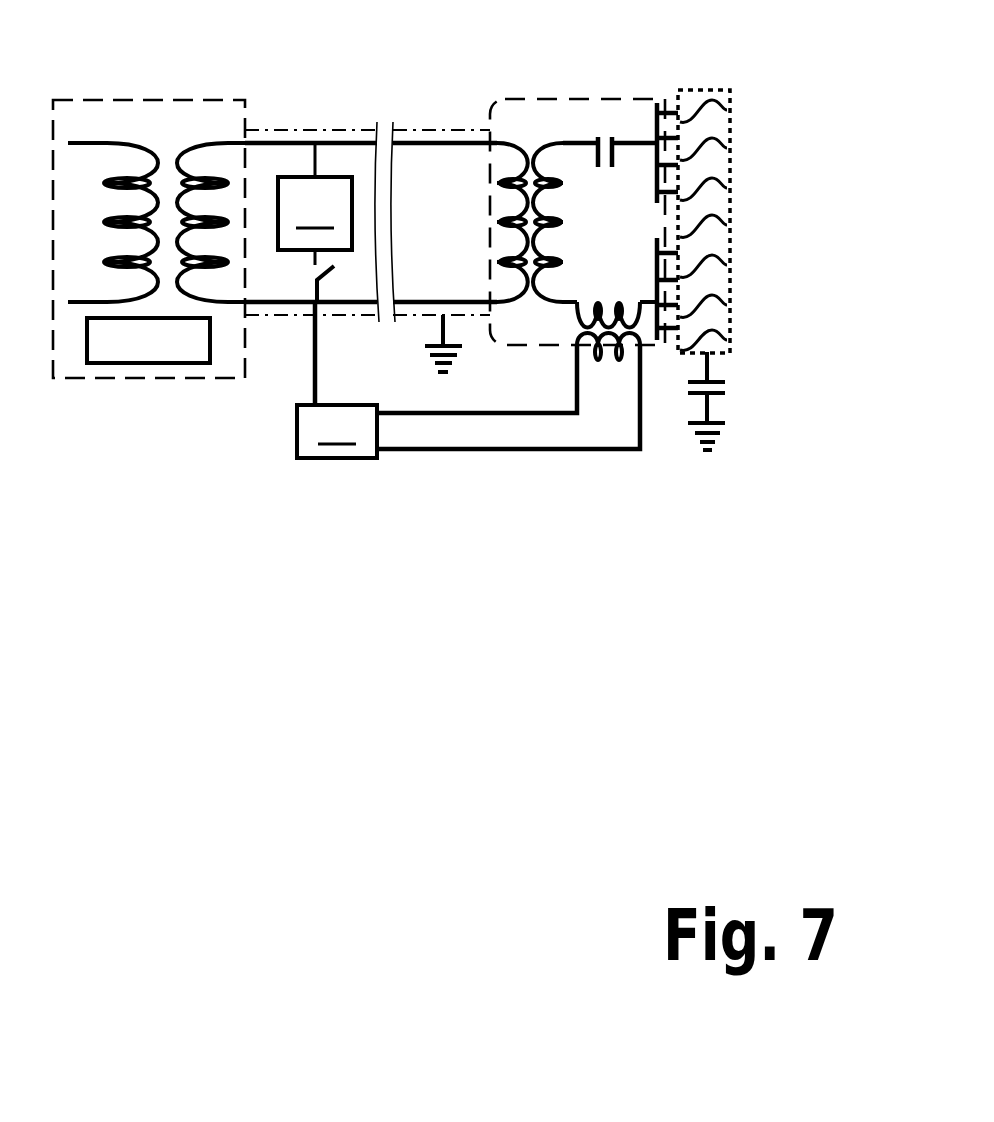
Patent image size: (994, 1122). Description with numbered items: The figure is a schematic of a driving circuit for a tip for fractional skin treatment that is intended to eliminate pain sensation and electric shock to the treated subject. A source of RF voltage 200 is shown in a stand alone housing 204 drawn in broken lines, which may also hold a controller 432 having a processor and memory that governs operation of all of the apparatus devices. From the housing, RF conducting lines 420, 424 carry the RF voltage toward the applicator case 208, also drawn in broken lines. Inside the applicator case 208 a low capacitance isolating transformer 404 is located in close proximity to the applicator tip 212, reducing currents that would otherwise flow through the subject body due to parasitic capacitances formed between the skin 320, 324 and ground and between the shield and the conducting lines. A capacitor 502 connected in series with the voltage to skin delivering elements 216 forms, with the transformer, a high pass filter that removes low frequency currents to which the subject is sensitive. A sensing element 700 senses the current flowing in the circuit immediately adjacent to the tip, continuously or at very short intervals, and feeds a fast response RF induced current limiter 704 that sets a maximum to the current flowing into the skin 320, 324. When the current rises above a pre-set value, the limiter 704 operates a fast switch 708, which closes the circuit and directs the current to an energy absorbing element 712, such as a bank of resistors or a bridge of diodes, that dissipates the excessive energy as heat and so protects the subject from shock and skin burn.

The source of RF voltage 200 is at (114, 86).
The stand alone housing 204 is at (108, 380).
The controller 432 is at (167, 360).
The RF conducting line 420 is at (272, 142).
The RF conducting line 424 is at (357, 308).
The energy absorbing element 712 is at (315, 204).
The fast switch 708 is at (311, 277).
The fast response RF induced current limiter 704 is at (468, 380).
The isolating transformer 404 is at (489, 202).
The applicator case 208 is at (523, 98).
The capacitor 502 is at (598, 143).
The applicator tip 212 is at (657, 110).
The voltage to skin delivering elements 216 is at (672, 333).
The sensing element 700 is at (567, 325).
The subject skin 320 is at (705, 90).
The subject skin 324 is at (732, 194).